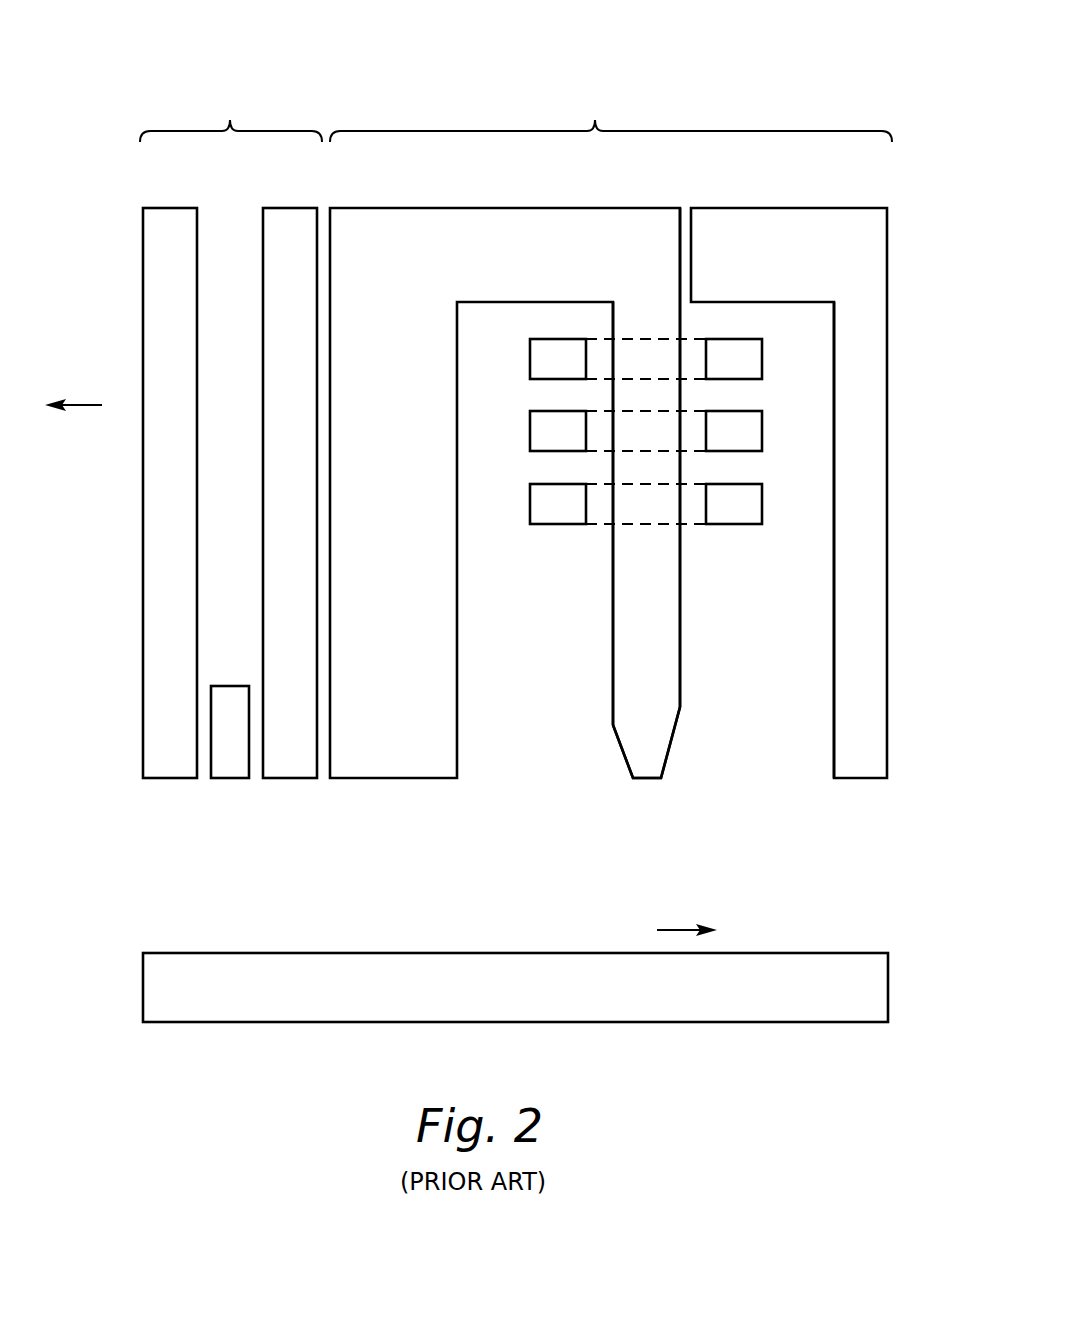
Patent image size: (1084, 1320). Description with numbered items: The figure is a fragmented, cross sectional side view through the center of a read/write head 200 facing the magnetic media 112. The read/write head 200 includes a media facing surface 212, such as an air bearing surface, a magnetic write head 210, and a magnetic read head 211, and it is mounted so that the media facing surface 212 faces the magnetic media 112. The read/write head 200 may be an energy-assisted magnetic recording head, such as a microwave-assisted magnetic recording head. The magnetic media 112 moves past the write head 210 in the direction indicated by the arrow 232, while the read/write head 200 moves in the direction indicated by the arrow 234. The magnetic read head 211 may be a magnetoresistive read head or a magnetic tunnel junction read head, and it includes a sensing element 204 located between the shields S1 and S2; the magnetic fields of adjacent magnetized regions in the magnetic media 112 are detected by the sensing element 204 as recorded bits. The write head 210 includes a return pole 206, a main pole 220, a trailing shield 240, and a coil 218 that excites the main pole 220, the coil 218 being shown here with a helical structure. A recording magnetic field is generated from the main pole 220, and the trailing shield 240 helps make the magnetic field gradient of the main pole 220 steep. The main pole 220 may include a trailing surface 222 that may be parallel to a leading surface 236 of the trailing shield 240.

The read/write head 200 is at (136, 30).
The magnetic read head 211 is at (231, 463).
The magnetic write head 210 is at (646, 465).
The MR shield S1 is at (166, 780).
The MR sensing element 204 is at (231, 780).
The MR shield S2 is at (292, 780).
The return pole 206 is at (397, 780).
The coil 218 is at (558, 525).
The main pole 220 is at (613, 734).
The trailing surface 222 is at (681, 690).
The media facing surface 212 is at (648, 780).
The leading surface 236 is at (834, 607).
The trailing shield 240 is at (888, 739).
The arrow 234 is at (86, 405).
The arrow 232 is at (673, 930).
The magnetic media 112 is at (888, 985).